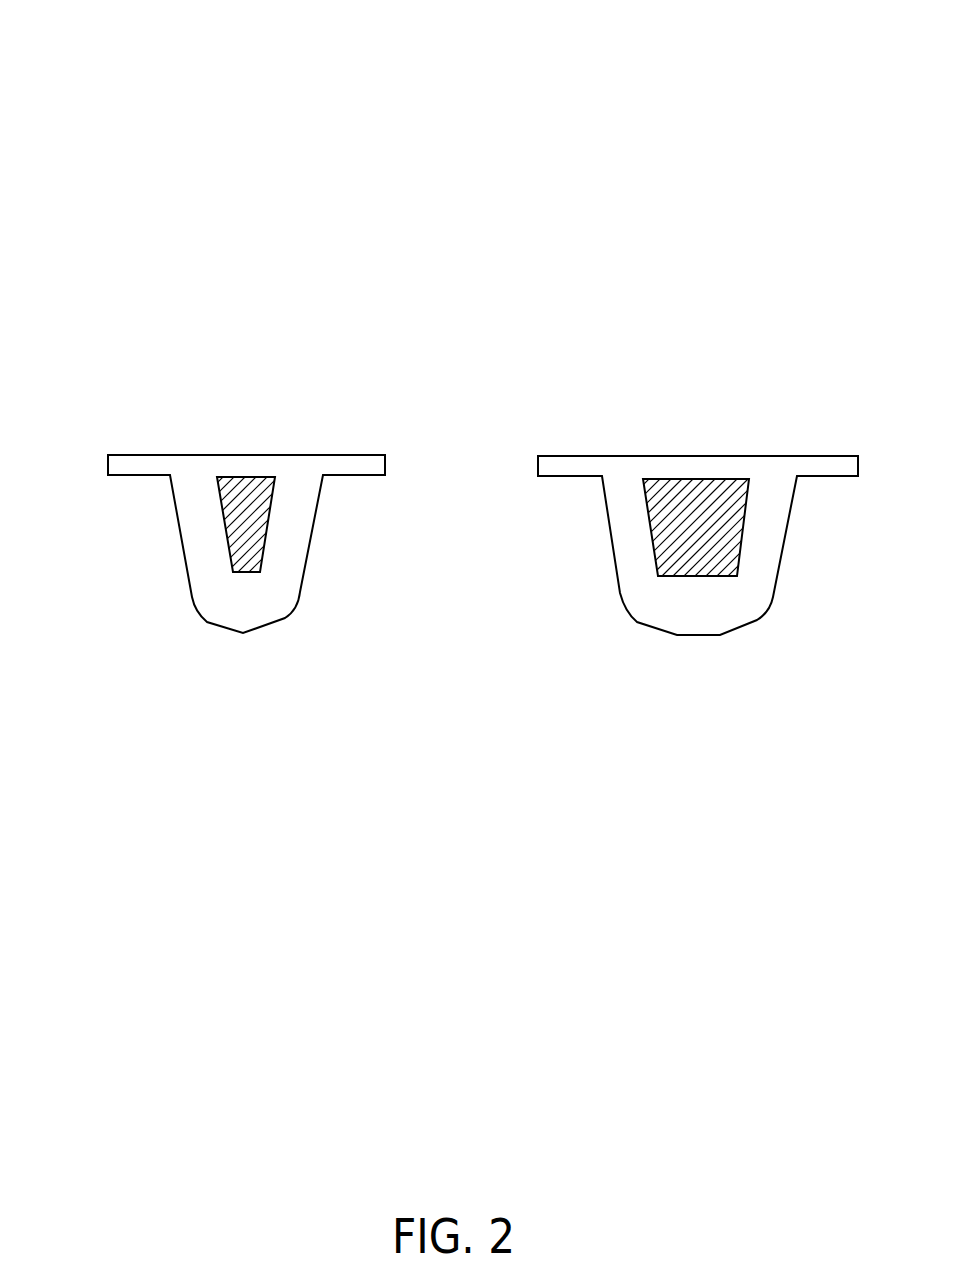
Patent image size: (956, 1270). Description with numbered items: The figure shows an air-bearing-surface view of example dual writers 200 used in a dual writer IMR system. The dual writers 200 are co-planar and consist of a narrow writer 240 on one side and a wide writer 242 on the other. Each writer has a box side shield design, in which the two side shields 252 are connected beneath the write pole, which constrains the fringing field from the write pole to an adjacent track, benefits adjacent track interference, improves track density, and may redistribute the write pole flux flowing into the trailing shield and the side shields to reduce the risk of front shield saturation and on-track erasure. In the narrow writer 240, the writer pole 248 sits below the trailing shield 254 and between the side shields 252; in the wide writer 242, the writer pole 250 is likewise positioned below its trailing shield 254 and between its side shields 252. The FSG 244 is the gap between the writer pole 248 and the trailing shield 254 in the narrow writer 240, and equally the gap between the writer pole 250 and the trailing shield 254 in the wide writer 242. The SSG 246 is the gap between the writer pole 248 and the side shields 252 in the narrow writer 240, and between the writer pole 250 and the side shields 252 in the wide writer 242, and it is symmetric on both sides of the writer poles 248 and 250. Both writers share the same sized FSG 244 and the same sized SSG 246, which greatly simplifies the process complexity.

The dual writers 200 is at (150, 50).
The narrow writer 240 is at (243, 416).
The wide writer 242 is at (697, 416).
The FSG 244 is at (271, 467).
The SSG 246 is at (201, 520).
The writer pole 248 is at (248, 573).
The writer pole 250 is at (698, 577).
The side shields 252 is at (157, 574).
The trailing shield 254 is at (212, 441).